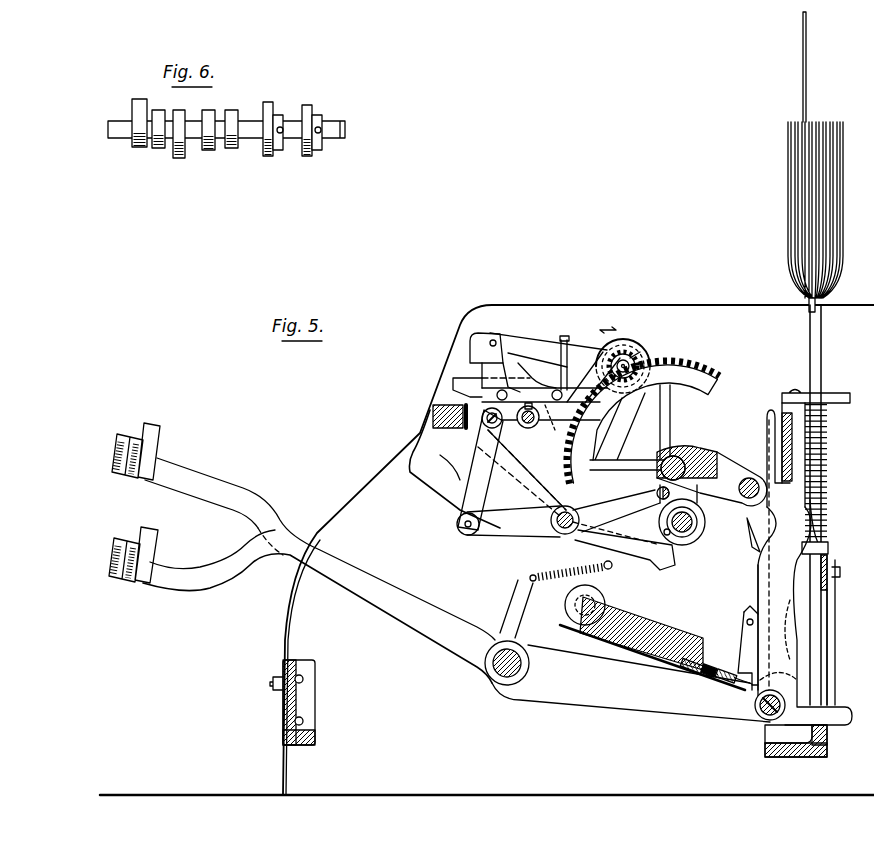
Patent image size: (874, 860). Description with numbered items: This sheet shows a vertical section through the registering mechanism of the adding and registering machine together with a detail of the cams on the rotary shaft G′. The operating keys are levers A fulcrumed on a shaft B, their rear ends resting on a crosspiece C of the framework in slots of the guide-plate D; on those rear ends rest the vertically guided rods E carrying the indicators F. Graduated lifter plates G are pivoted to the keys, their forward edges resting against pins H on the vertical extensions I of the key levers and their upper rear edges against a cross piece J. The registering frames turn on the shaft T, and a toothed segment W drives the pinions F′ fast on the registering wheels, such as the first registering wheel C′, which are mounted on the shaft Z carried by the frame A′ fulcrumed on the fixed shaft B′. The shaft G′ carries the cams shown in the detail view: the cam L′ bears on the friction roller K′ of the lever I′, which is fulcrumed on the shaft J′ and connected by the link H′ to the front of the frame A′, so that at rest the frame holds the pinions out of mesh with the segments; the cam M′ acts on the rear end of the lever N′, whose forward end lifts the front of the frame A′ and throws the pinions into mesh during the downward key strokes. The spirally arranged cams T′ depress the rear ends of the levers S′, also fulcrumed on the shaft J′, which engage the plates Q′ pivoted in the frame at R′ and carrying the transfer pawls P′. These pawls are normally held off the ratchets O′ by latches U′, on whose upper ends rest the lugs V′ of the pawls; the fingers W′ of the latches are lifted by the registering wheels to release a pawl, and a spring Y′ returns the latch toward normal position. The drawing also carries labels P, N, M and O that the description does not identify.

In FIG. 6, the rotary shaft G′ is at (335, 126).
In FIG. 5, the rotary shaft G′ is at (706, 522).
In FIG. 6, the cams T′ is at (232, 149).
In FIG. 6, the second cam M′ is at (268, 157).
In FIG. 5, the second cam M′ is at (712, 491).
In FIG. 6, the cam L′ is at (311, 157).
In FIG. 5, the cam L′ is at (705, 548).
In FIG. 5, the indicators F is at (790, 181).
In FIG. 5, the vertically-guided rods E is at (810, 363).
In FIG. 5, the threaded rod P is at (822, 507).
In FIG. 5, the guide-plate D is at (837, 670).
In FIG. 5, the crosspiece C is at (812, 750).
In FIG. 5, the cross piece J is at (766, 420).
In FIG. 5, the lever N is at (765, 562).
In FIG. 5, the graduated plates or lifters G is at (775, 586).
In FIG. 5, the pins H is at (745, 608).
In FIG. 5, the vertical extensions I is at (740, 622).
In FIG. 5, the hatched block M is at (695, 456).
In FIG. 5, the shaft T is at (678, 456).
In FIG. 5, the stop O is at (750, 535).
In FIG. 5, the toothed segment W is at (688, 362).
In FIG. 5, the ratchets O′ is at (640, 364).
In FIG. 5, the pinions F′ is at (637, 345).
In FIG. 5, the shaft Z is at (640, 352).
In FIG. 5, the first registering wheel C′ is at (648, 360).
In FIG. 5, the plates Q′ is at (485, 342).
In FIG. 5, the transfer pawls P′ is at (530, 345).
In FIG. 5, the lugs V′ is at (568, 340).
In FIG. 5, the fingers W′ is at (580, 360).
In FIG. 5, the latches U′ is at (552, 378).
In FIG. 5, the frame A′ is at (544, 399).
In FIG. 5, the fulcrum shaft B′ is at (533, 428).
In FIG. 5, the spring Y′ is at (552, 418).
In FIG. 5, the pivot R′ is at (467, 385).
In FIG. 5, the link H′ is at (470, 503).
In FIG. 5, the lever I′ is at (512, 530).
In FIG. 5, the shaft J′ is at (562, 534).
In FIG. 5, the friction roller K′ is at (650, 492).
In FIG. 5, the levers S′ is at (460, 460).
In FIG. 5, the lever N′ is at (548, 482).
In FIG. 5, the key levers A is at (432, 603).
In FIG. 5, the shaft B is at (516, 690).